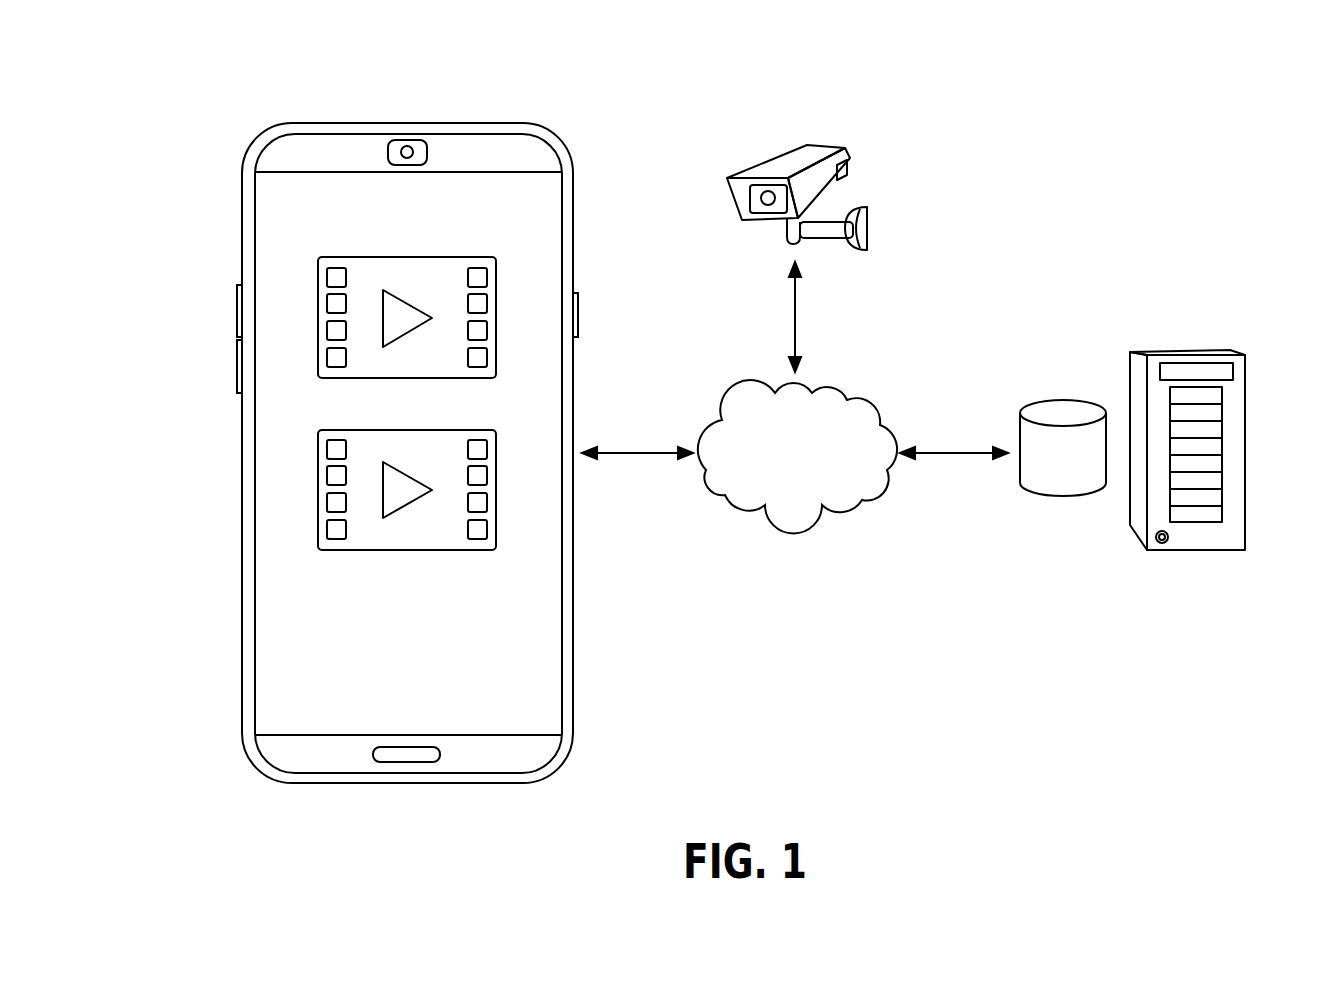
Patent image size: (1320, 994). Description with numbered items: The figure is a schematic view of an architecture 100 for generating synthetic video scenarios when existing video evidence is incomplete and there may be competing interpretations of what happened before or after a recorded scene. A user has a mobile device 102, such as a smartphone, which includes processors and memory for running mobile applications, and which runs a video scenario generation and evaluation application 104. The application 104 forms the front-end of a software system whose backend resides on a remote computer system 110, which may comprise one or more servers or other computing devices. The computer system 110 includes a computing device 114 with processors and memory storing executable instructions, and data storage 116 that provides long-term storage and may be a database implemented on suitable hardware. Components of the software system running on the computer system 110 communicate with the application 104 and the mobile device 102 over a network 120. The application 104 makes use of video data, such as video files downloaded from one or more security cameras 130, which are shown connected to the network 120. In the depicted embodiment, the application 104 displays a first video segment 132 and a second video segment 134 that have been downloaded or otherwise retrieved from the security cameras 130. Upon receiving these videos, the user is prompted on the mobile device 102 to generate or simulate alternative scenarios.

The system 100 is at (1000, 152).
The mobile device 102 is at (575, 232).
The video scenario generation and evaluation application 104 is at (532, 604).
The computer system 110 is at (1255, 340).
The computing device 114 is at (1128, 387).
The data storage 116 is at (1067, 497).
The network 120 is at (792, 520).
The security cameras 130 is at (782, 152).
The first video segment 132 is at (367, 257).
The second video segment 134 is at (317, 490).